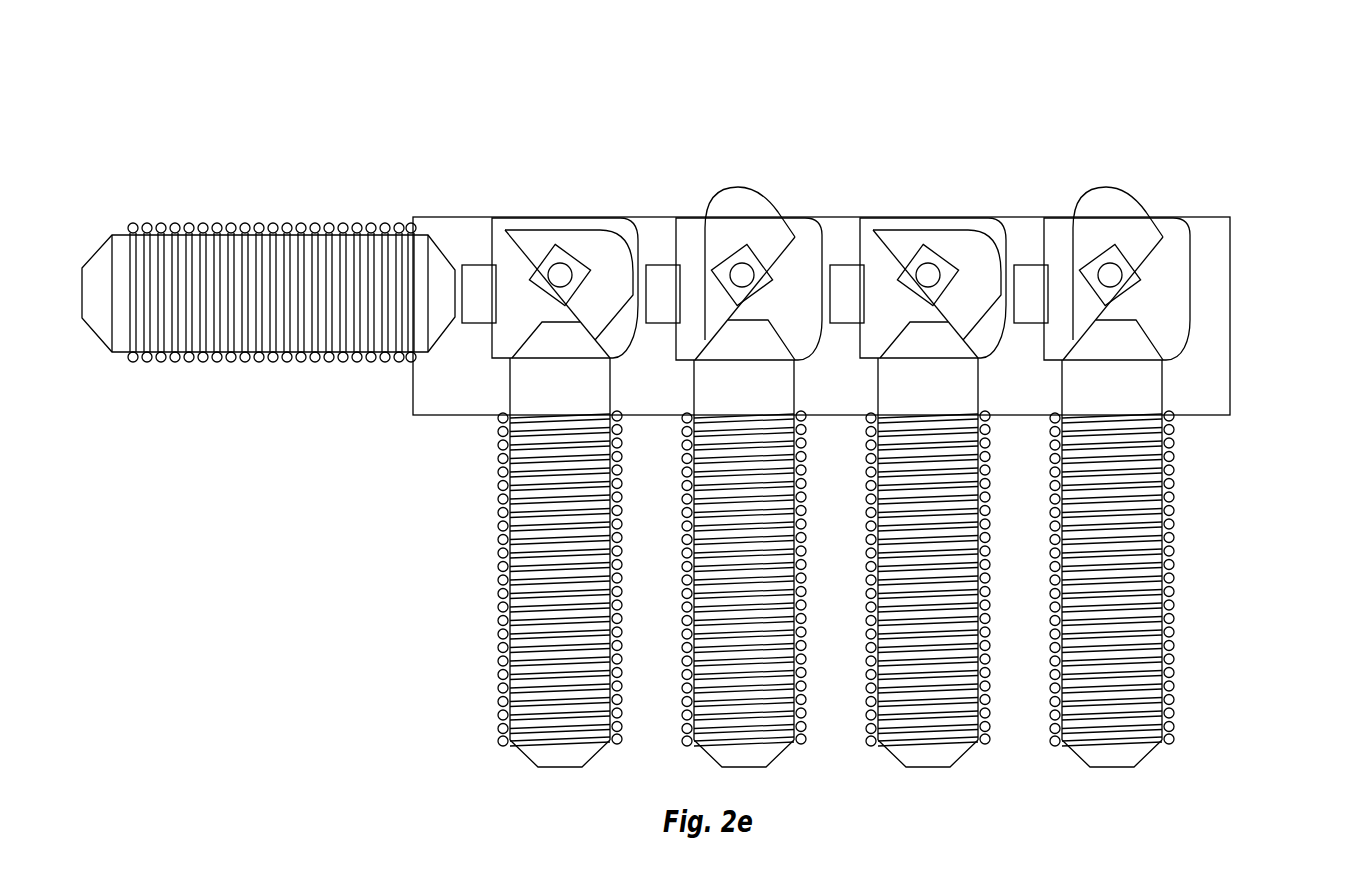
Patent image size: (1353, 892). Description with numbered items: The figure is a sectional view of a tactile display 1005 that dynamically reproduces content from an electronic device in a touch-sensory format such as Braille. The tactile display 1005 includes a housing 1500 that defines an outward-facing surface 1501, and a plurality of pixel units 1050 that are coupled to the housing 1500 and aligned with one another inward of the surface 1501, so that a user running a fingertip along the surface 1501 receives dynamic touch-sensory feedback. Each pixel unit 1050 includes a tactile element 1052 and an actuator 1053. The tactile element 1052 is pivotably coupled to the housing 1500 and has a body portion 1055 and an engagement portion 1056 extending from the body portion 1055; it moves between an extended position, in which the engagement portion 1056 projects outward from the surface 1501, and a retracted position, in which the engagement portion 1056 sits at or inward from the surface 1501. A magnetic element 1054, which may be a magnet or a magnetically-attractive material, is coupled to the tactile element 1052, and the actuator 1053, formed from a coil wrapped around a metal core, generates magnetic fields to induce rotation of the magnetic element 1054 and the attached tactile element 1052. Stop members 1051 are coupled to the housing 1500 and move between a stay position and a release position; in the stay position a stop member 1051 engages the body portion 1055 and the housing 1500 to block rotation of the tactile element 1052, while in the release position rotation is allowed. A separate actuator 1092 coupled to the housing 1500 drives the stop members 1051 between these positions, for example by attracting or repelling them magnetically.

The tactile display 1005 is at (268, 205).
The actuator 1092 is at (293, 222).
The pixel unit 1050 is at (1055, 167).
The stop member 1051 is at (473, 260).
The housing 1500 is at (828, 227).
The outward-facing surface 1501 is at (843, 217).
The magnetic element 1054 is at (933, 247).
The tactile element 1052 is at (1097, 180).
The engagement portion 1056 is at (1181, 231).
The body portion 1055 is at (1153, 253).
The actuator 1053 is at (1173, 552).